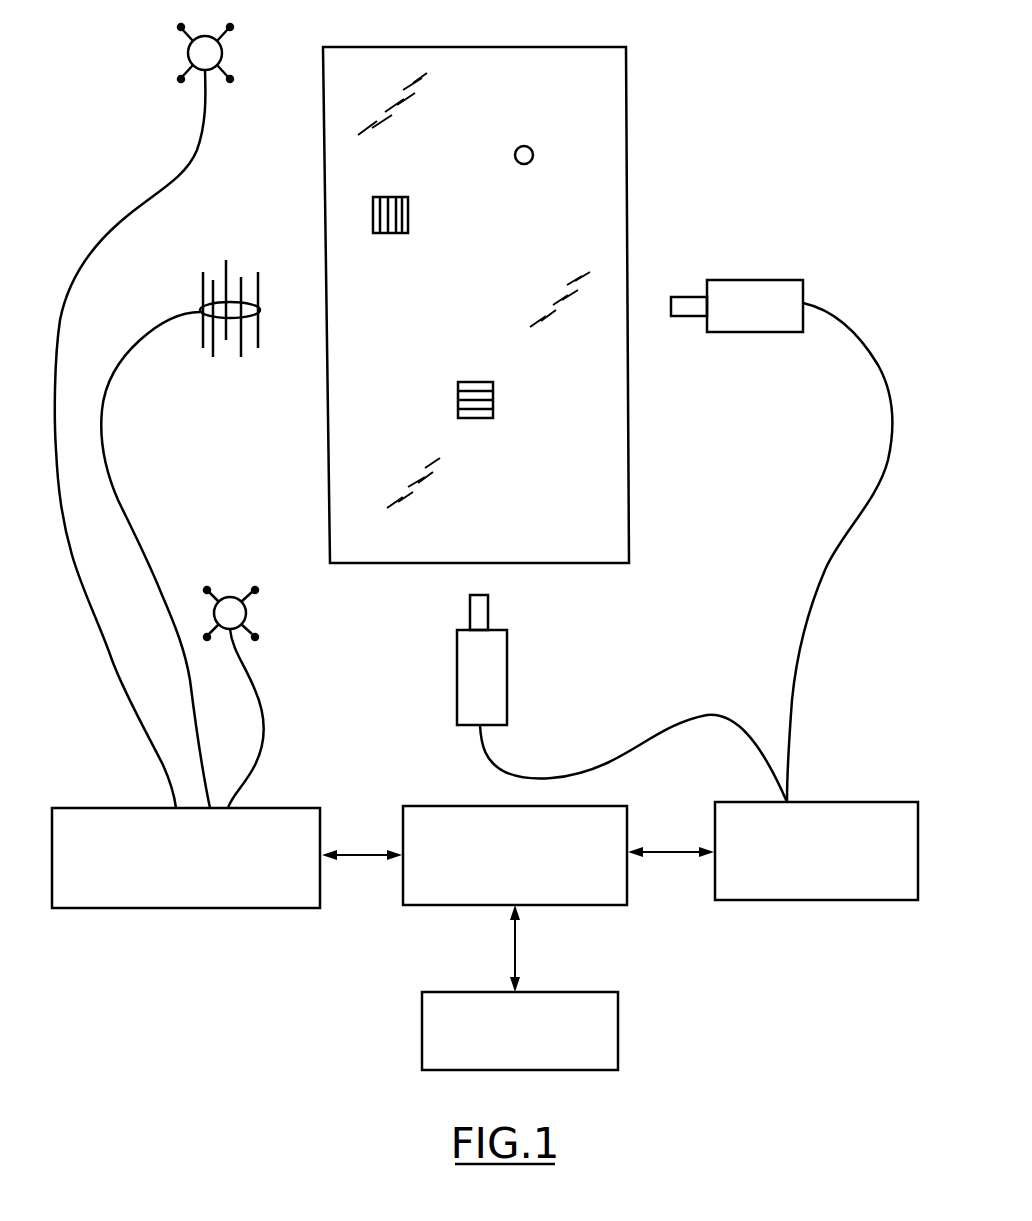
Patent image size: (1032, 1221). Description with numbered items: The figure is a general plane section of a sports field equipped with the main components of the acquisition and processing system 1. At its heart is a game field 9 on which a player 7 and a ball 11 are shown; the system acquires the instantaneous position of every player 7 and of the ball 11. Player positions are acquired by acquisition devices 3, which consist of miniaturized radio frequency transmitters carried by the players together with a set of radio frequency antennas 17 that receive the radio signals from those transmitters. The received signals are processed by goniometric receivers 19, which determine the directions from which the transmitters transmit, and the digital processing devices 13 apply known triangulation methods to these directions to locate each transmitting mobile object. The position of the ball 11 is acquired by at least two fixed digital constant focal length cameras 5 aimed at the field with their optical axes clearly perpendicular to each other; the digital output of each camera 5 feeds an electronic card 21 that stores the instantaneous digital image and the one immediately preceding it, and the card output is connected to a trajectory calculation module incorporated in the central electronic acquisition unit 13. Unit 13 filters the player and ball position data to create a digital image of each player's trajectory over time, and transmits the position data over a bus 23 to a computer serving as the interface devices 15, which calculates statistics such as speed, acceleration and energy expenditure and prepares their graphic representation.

The acquisition and processing system 1 is at (158, 981).
The acquisition devices 3 is at (90, 190).
The digital constant focal length cameras 5 is at (785, 228).
The player 7 is at (407, 216).
The game field 9 is at (610, 521).
The ball 11 is at (533, 157).
The digital processing devices 13 is at (440, 812).
The interface devices 15 is at (607, 1030).
The radio frequency antennas 17 is at (235, 318).
The goniometric receivers 19 is at (232, 895).
The electronic card 21 is at (858, 890).
The bus 23 is at (513, 943).